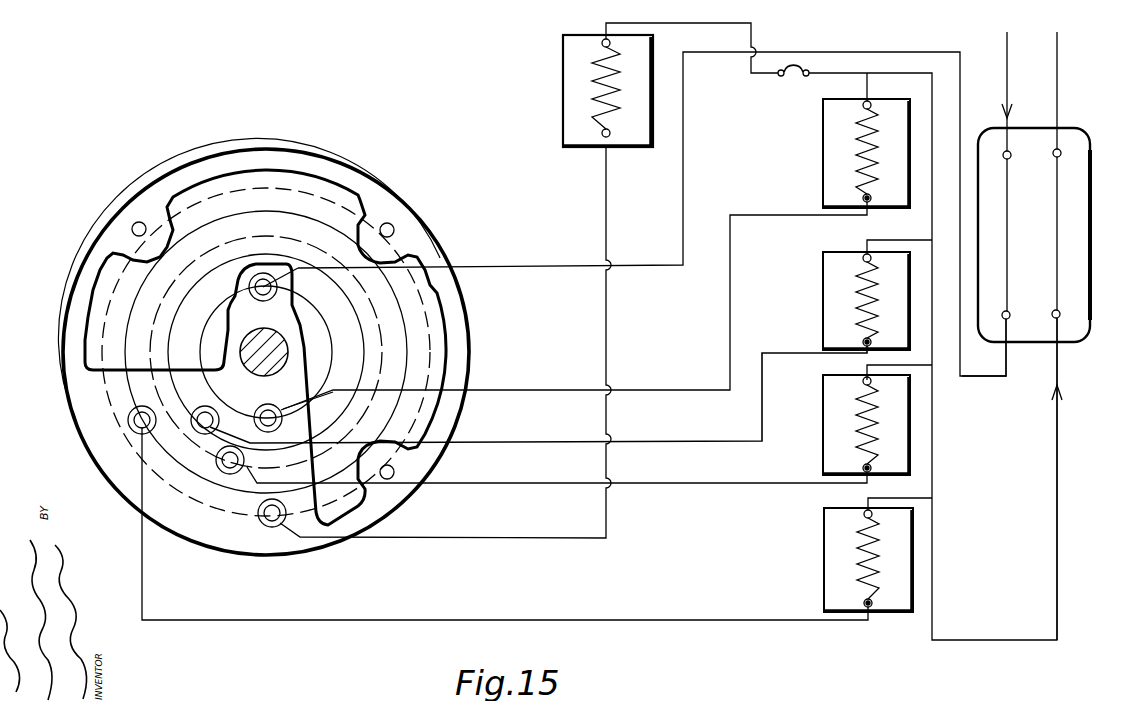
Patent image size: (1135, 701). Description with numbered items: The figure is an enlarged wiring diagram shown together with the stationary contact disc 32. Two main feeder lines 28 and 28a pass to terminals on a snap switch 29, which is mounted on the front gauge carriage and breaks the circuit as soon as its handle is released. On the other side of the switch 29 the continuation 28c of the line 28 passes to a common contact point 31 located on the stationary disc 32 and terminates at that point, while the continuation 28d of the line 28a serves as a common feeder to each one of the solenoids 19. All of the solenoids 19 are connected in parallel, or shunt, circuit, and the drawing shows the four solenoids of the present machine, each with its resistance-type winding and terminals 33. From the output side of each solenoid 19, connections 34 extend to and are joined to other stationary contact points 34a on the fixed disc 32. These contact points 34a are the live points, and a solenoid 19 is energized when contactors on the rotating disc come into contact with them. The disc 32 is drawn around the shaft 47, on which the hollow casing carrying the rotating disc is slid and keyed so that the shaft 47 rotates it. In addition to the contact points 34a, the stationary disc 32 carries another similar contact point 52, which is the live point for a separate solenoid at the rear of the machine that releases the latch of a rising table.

The solenoid 19 is at (843, 158).
The main feeder line 28 is at (1009, 106).
The main feeder line 28a is at (1059, 105).
The continuation of line 28 28c is at (977, 379).
The continuation of line 28a 28d is at (1062, 429).
The snap switch 29 is at (1077, 248).
The common contact point 31 is at (270, 280).
The stationary disc 32 is at (345, 203).
The resistance terminal 33 is at (868, 200).
The connections 34 is at (690, 373).
The stationary contact points 34a is at (200, 417).
The shaft 47 is at (290, 347).
The contact point 52 is at (283, 527).